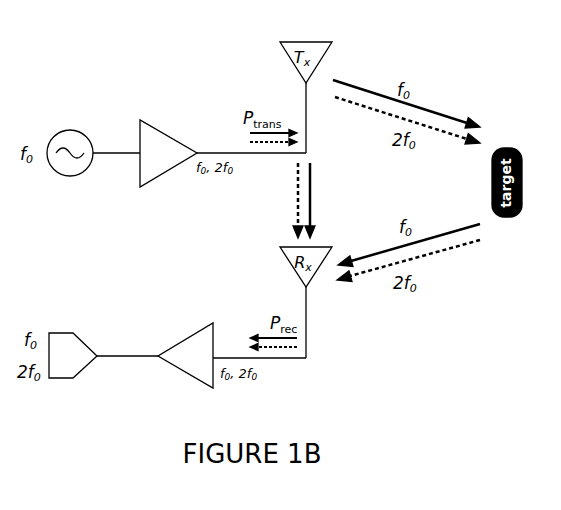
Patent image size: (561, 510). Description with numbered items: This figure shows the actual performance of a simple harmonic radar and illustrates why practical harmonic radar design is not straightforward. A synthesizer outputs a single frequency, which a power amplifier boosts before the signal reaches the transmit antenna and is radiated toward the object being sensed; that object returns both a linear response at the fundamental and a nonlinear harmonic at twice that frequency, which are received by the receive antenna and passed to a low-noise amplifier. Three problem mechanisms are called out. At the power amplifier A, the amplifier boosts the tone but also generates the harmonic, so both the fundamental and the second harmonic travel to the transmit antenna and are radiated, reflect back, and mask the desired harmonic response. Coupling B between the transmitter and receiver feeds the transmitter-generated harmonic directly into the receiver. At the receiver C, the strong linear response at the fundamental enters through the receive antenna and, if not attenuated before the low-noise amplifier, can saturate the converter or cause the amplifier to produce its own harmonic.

The power amplifier harmonic generation A is at (168, 168).
The transmitter-receiver coupling B is at (324, 200).
The receiver linear response leakage C is at (131, 350).